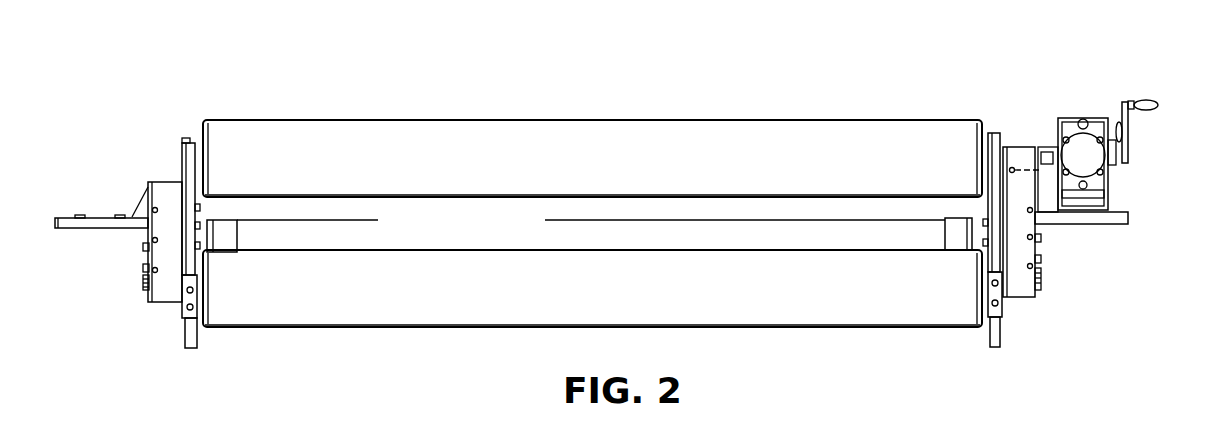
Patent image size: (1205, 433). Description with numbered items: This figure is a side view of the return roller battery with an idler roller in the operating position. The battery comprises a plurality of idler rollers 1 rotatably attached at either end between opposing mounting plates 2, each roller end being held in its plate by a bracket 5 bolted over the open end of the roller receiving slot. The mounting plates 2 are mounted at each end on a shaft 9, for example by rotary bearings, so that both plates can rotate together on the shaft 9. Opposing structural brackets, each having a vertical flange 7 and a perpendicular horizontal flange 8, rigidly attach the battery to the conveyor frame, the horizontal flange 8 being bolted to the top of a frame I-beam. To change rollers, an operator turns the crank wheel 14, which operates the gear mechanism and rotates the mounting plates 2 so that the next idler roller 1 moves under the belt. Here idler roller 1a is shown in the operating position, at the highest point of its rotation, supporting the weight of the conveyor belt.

The idler roller 1 is at (538, 275).
The idler roller 1a is at (388, 157).
The mounting plate 2 is at (193, 340).
The bracket 5 is at (184, 303).
The vertical flange 7 is at (147, 262).
The horizontal flange 8 is at (101, 225).
The shaft 9 is at (625, 230).
The crank wheel 14 is at (1126, 100).